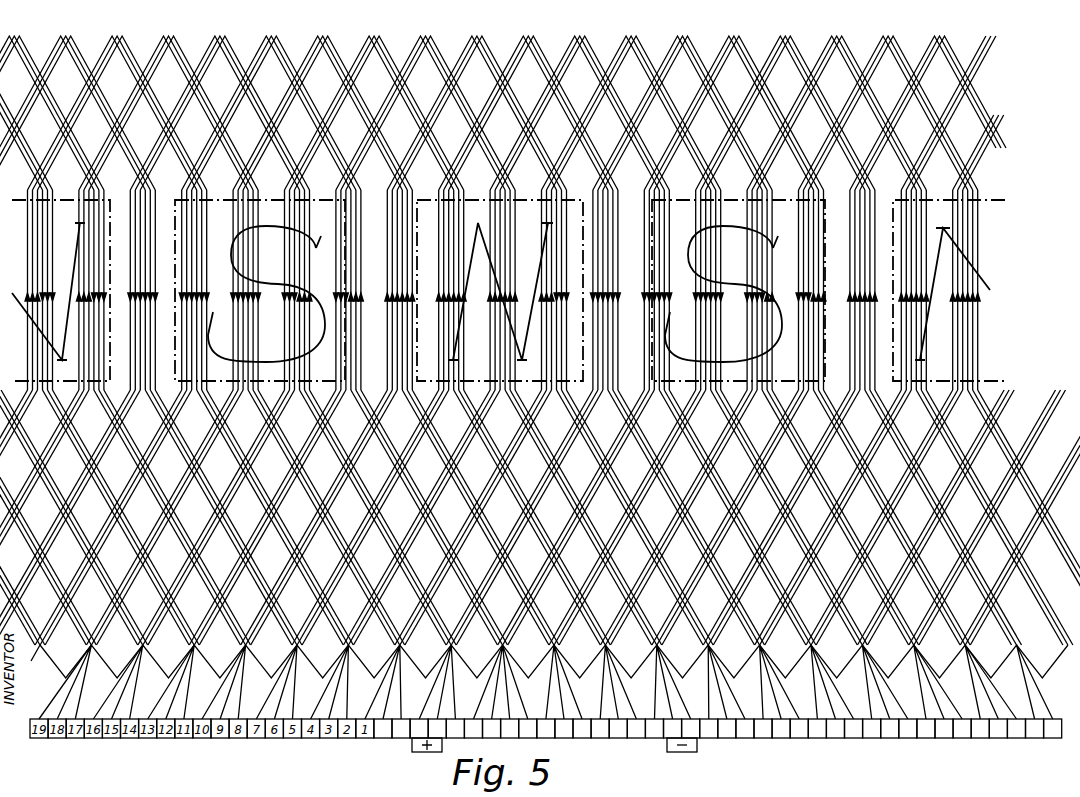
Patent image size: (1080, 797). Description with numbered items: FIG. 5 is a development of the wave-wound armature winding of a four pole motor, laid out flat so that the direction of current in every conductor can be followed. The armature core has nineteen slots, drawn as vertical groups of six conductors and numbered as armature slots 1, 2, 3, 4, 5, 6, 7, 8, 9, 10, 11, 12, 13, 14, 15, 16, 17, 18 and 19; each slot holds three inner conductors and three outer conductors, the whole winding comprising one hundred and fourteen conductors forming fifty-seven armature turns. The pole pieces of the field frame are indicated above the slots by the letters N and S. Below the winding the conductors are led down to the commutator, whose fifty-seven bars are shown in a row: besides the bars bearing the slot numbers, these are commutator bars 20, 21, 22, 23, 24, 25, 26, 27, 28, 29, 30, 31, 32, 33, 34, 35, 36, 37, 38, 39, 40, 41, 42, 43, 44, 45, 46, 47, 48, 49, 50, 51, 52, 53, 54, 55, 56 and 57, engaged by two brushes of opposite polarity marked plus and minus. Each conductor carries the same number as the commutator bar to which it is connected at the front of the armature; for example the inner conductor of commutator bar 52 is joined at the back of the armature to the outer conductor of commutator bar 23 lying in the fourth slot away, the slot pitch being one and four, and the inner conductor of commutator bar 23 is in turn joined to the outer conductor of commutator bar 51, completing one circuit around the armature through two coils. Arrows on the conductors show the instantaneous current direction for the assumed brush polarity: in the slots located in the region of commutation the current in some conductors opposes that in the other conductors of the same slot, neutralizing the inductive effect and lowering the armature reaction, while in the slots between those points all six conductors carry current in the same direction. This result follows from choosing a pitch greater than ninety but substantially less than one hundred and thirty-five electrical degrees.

The armature slot 1 is at (503, 308).
The armature slot 2 is at (451, 308).
The armature slot 3 is at (400, 308).
The armature slot 4 is at (348, 308).
The armature slot 5 is at (297, 308).
The armature slot 6 is at (246, 308).
The armature slot 7 is at (194, 308).
The armature slot 8 is at (143, 308).
The armature slot 9 is at (91, 308).
The armature slot 10 is at (40, 308).
The armature slot 11 is at (965, 308).
The armature slot 12 is at (914, 308).
The armature slot 13 is at (862, 308).
The armature slot 14 is at (811, 308).
The armature slot 15 is at (760, 308).
The armature slot 16 is at (708, 308).
The armature slot 17 is at (657, 308).
The armature slot 18 is at (605, 308).
The armature slot 19 is at (554, 308).
The commutator bar 20 is at (1053, 728).
The commutator bar 21 is at (1035, 728).
The commutator bar 22 is at (1016, 728).
The commutator bar 23 is at (998, 728).
The commutator bar 24 is at (980, 728).
The commutator bar 25 is at (962, 728).
The commutator bar 26 is at (944, 728).
The commutator bar 27 is at (926, 728).
The commutator bar 28 is at (908, 728).
The commutator bar 29 is at (890, 728).
The commutator bar 30 is at (872, 728).
The commutator bar 31 is at (854, 728).
The commutator bar 32 is at (835, 728).
The commutator bar 33 is at (817, 728).
The commutator bar 34 is at (799, 728).
The commutator bar 35 is at (781, 728).
The commutator bar 36 is at (763, 728).
The commutator bar 37 is at (745, 728).
The commutator bar 38 is at (727, 728).
The commutator bar 39 is at (709, 728).
The commutator bar 40 is at (691, 728).
The commutator bar 41 is at (673, 728).
The commutator bar 42 is at (654, 728).
The commutator bar 43 is at (636, 728).
The commutator bar 44 is at (618, 728).
The commutator bar 45 is at (600, 728).
The commutator bar 46 is at (582, 728).
The commutator bar 47 is at (564, 728).
The commutator bar 48 is at (546, 728).
The commutator bar 49 is at (528, 728).
The commutator bar 50 is at (510, 728).
The commutator bar 51 is at (492, 728).
The commutator bar 52 is at (473, 728).
The commutator bar 53 is at (455, 728).
The commutator bar 54 is at (437, 728).
The commutator bar 55 is at (419, 728).
The commutator bar 56 is at (401, 728).
The commutator bar 57 is at (383, 728).